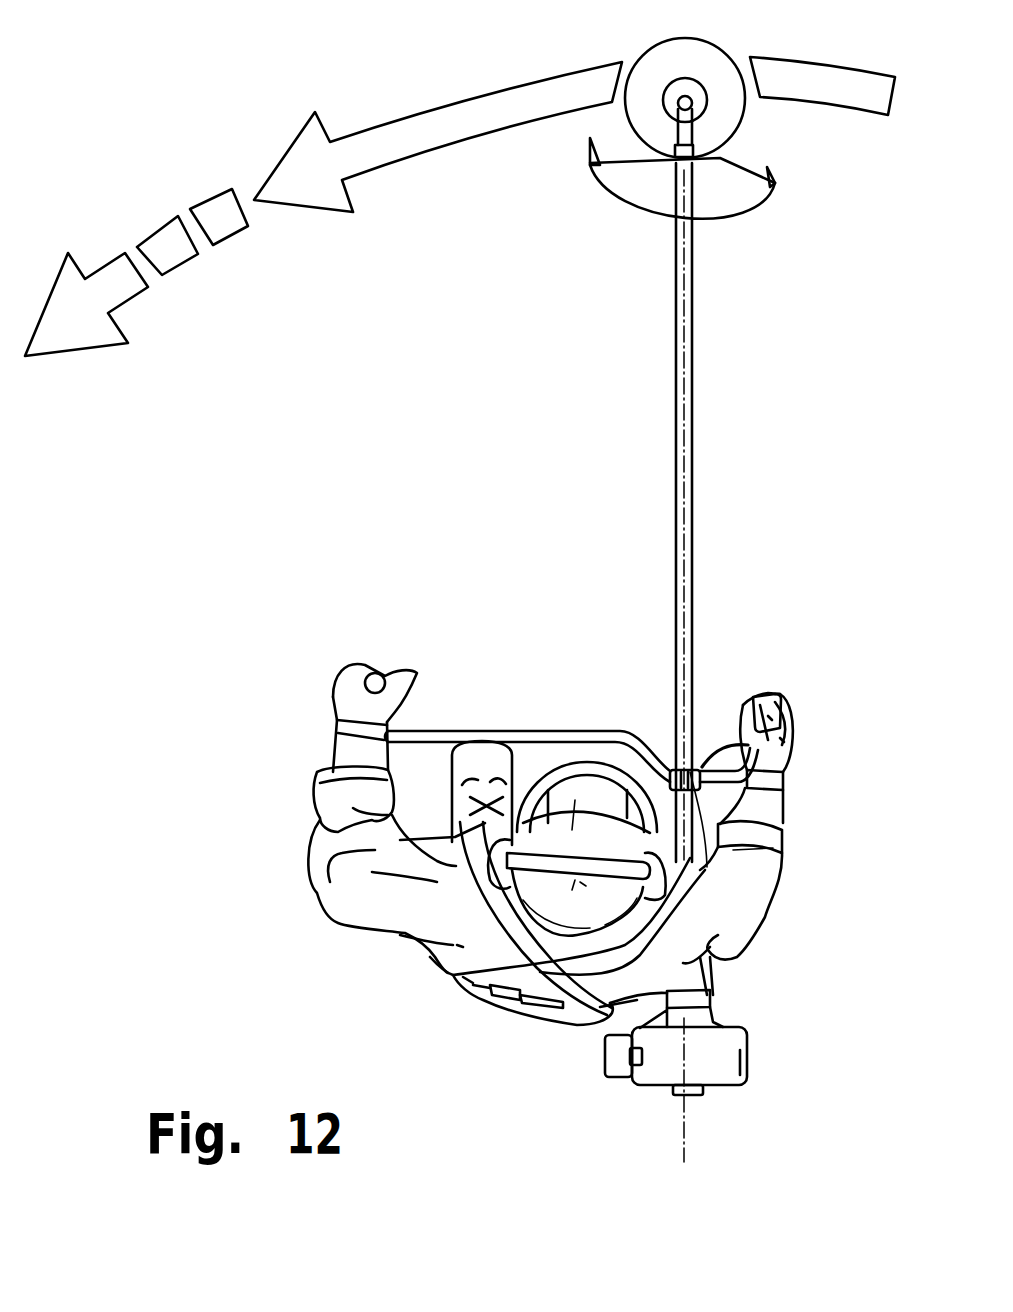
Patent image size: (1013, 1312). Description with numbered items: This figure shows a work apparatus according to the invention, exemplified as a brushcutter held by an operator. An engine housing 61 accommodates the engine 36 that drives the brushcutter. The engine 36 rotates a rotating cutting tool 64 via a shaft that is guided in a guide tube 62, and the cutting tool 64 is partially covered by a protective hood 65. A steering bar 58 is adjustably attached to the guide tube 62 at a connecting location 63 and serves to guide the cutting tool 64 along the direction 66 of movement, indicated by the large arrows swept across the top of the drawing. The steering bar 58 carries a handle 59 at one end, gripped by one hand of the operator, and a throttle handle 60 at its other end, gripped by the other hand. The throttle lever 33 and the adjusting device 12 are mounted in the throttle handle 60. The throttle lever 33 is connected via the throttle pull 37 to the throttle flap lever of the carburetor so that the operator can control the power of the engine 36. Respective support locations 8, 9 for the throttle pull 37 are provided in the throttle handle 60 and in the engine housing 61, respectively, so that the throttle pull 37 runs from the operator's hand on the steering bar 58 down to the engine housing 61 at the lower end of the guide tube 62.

The direction of movement 66 is at (415, 128).
The cutting tool 64 is at (728, 107).
The protective hood 65 is at (661, 178).
The guide tube 62 is at (683, 340).
The handle 59 is at (382, 676).
The steering bar 58 is at (437, 731).
The connecting location 63 is at (677, 770).
The throttle pull 37 is at (713, 748).
The throttle lever 33 is at (768, 695).
The adjusting device 12 is at (779, 697).
The throttle handle 60 is at (770, 718).
The support location 8 is at (782, 740).
The support location 9 is at (722, 1048).
The engine housing 61 is at (652, 1067).
The engine 36 is at (718, 1065).